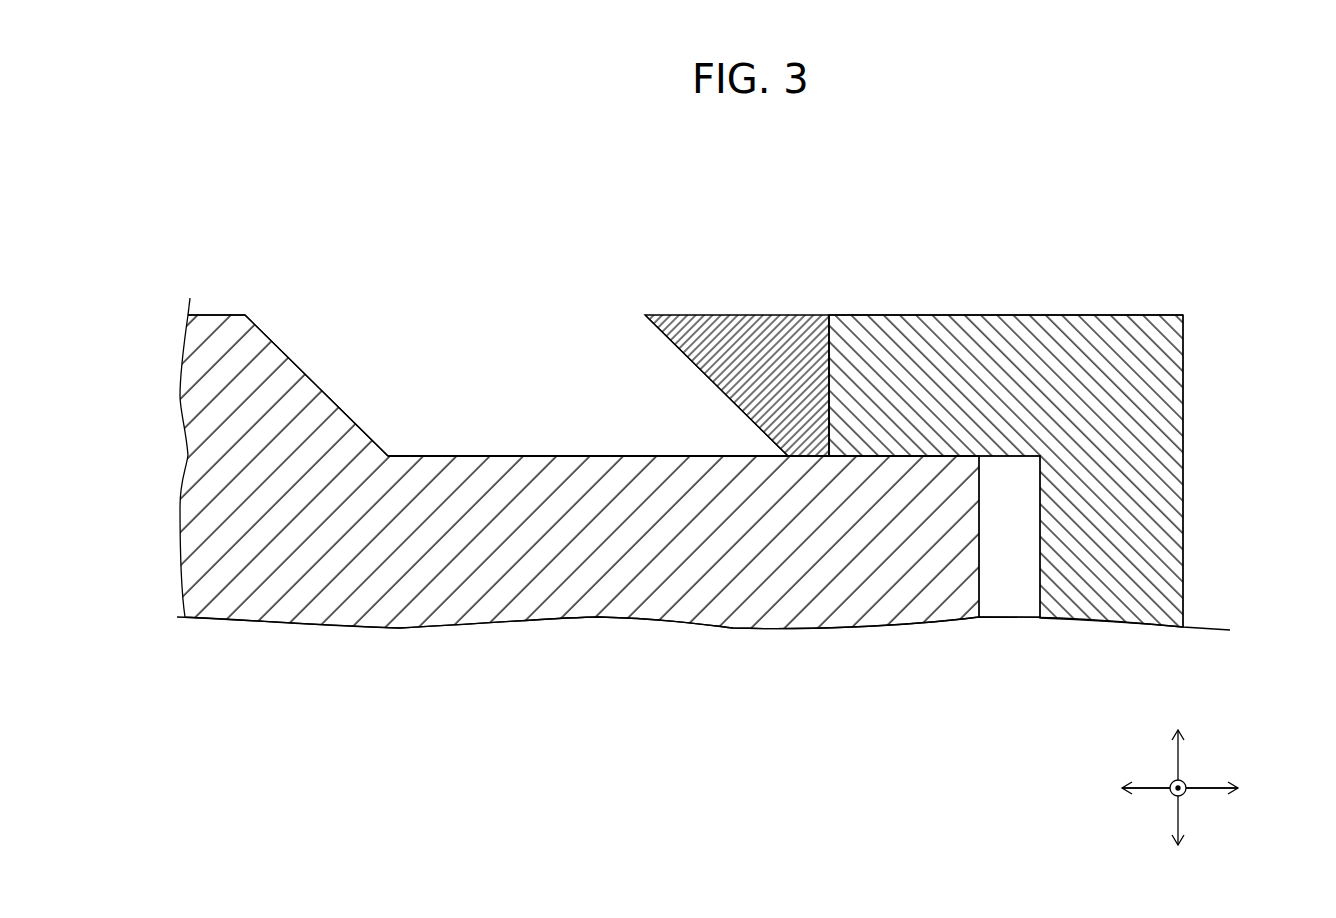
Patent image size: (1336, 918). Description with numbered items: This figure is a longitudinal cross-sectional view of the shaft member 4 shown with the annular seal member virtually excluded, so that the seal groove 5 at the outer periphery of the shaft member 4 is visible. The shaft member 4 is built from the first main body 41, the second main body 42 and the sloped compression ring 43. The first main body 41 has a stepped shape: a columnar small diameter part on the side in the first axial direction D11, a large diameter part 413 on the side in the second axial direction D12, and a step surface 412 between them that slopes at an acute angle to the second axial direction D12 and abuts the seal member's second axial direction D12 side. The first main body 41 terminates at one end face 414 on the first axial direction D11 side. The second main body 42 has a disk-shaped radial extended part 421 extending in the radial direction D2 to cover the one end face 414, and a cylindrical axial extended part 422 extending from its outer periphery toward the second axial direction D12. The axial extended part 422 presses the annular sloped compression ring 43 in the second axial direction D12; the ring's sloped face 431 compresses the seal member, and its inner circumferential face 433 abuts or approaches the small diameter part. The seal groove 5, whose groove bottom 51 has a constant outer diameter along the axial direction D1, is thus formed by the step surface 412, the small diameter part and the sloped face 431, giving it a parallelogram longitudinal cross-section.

The shaft member 4 is at (740, 415).
The first main body 41 is at (447, 615).
The step surface 412 is at (295, 365).
The large diameter part 413 is at (213, 322).
The one end face 414 is at (978, 585).
The second main body 42 is at (1163, 532).
The radial extended part 421 is at (1163, 410).
The axial extended part 422 is at (922, 320).
The sloped compression ring 43 is at (735, 318).
The sloped face 431 is at (683, 350).
The inner circumferential face 433 is at (829, 342).
The seal groove 5 is at (490, 402).
The groove bottom 51 is at (545, 455).
The axial direction D1 is at (1200, 790).
The radial direction D2 is at (1178, 768).
The first axial direction D11 is at (1238, 787).
The second axial direction D12 is at (1119, 787).